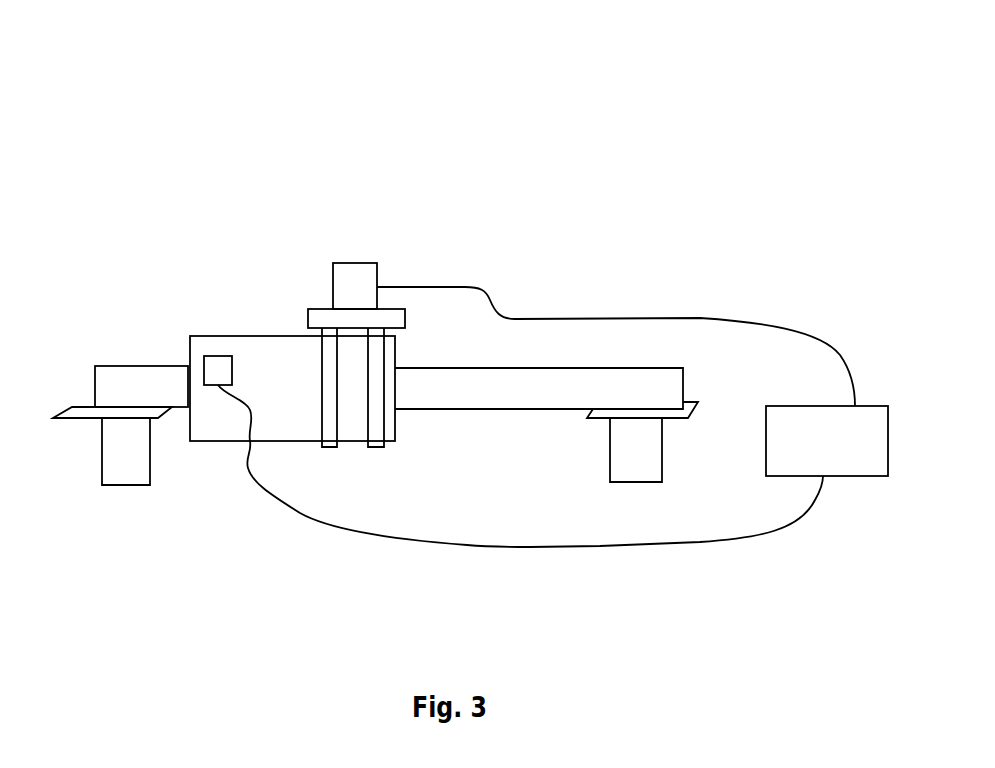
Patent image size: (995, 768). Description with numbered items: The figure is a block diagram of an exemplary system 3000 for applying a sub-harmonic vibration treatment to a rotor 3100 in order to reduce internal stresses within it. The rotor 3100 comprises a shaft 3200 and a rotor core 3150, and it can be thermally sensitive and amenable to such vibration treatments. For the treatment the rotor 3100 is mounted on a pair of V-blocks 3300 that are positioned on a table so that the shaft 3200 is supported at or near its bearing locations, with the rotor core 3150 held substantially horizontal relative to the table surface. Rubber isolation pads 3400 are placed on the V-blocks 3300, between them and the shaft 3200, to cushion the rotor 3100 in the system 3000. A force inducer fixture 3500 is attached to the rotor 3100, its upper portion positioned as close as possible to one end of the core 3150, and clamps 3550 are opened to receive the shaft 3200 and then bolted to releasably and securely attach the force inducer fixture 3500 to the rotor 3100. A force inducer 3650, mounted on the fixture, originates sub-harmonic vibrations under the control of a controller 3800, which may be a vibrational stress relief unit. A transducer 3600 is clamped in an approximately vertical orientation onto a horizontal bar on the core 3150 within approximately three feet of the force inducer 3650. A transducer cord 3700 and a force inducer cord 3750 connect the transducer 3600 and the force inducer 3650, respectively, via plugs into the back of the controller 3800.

The system 3000 is at (67, 48).
The rotor 3100 is at (197, 296).
The rotor core 3150 is at (292, 388).
The shaft 3200 is at (539, 388).
The V-blocks 3300 is at (382, 466).
The rubber isolation pads 3400 is at (79, 400).
The force inducer fixture 3500 is at (311, 307).
The clamps 3550 is at (374, 450).
The transducer 3600 is at (209, 355).
The force inducer 3650 is at (357, 261).
The transducer cord 3700 is at (520, 480).
The force inducer cord 3750 is at (616, 344).
The controller 3800 is at (827, 441).